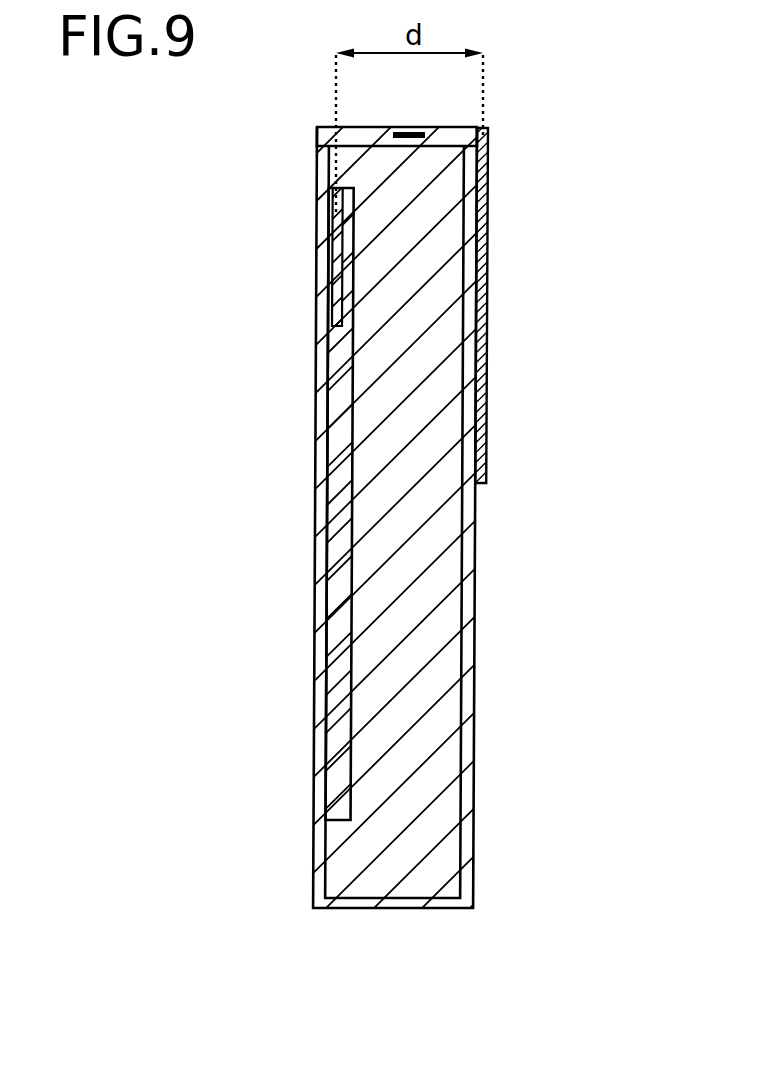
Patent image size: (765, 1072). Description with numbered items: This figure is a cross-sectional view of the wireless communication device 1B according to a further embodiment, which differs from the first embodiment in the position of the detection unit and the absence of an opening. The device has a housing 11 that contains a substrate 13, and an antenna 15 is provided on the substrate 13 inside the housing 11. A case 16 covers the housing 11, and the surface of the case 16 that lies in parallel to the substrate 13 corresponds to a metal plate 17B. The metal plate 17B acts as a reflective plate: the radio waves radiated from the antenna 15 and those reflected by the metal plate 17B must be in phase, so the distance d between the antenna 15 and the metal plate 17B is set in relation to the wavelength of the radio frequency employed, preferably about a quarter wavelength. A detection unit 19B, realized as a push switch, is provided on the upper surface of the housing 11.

The housing 11 is at (476, 832).
The substrate 13 is at (345, 772).
The antenna 15 is at (336, 272).
The case 16 is at (318, 136).
The metal plate 17B is at (488, 372).
The detection unit 19B is at (404, 146).
The wireless communication device 1B is at (565, 138).